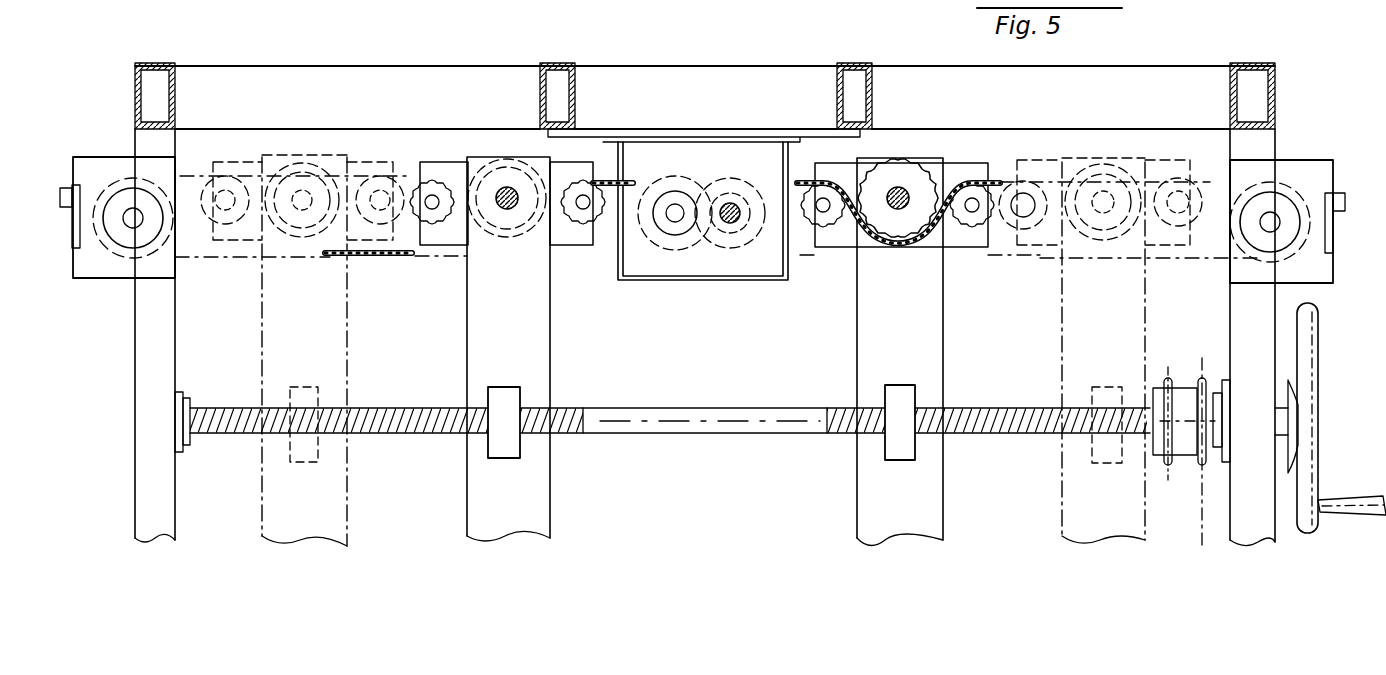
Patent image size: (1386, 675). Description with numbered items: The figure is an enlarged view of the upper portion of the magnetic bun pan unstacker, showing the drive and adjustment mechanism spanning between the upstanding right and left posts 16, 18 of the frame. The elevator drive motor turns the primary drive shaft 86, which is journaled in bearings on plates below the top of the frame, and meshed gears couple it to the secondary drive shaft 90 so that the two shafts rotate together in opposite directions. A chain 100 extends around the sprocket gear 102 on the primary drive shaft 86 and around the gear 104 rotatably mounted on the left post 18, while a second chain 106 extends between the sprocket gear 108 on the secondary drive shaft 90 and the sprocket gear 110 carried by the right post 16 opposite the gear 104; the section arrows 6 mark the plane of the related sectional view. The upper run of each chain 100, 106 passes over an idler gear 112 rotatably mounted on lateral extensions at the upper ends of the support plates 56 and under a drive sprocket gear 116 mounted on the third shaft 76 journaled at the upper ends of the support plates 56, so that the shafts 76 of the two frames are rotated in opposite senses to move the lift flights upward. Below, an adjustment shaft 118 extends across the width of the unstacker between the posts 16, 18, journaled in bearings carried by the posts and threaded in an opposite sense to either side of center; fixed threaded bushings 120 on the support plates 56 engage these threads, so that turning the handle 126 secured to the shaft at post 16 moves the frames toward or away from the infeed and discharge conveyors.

The section line 6- 6 is at (140, 142).
The right post 16 is at (1265, 357).
The left post 18 is at (165, 367).
The support plates 56 is at (470, 355).
The third shaft 76 is at (507, 187).
The primary drive shaft 86 is at (730, 227).
The secondary drive shaft 90 is at (675, 222).
The chain 100 is at (187, 177).
The sprocket gear 102 is at (742, 187).
The gear 104 is at (117, 180).
The chain 106 is at (1208, 180).
The sprocket gear 108 is at (658, 190).
The sprocket gear 110 is at (1278, 183).
The idler gear 112 is at (570, 218).
The drive sprocket gear 116 is at (483, 177).
The adjustment shaft 118 is at (992, 408).
The fixed threaded bushing 120 is at (512, 398).
The handle 126 is at (1315, 325).